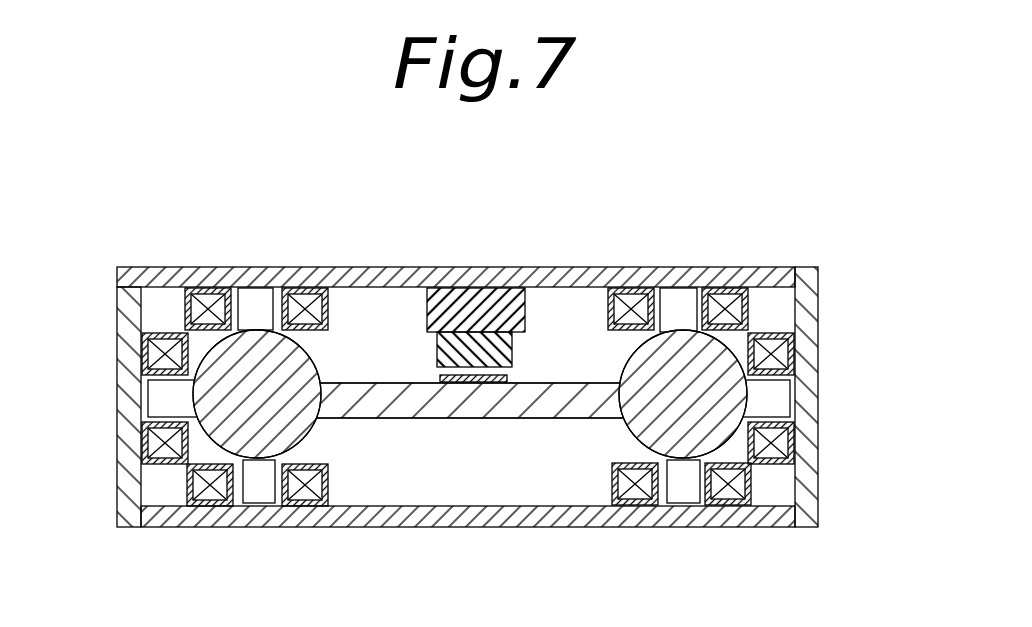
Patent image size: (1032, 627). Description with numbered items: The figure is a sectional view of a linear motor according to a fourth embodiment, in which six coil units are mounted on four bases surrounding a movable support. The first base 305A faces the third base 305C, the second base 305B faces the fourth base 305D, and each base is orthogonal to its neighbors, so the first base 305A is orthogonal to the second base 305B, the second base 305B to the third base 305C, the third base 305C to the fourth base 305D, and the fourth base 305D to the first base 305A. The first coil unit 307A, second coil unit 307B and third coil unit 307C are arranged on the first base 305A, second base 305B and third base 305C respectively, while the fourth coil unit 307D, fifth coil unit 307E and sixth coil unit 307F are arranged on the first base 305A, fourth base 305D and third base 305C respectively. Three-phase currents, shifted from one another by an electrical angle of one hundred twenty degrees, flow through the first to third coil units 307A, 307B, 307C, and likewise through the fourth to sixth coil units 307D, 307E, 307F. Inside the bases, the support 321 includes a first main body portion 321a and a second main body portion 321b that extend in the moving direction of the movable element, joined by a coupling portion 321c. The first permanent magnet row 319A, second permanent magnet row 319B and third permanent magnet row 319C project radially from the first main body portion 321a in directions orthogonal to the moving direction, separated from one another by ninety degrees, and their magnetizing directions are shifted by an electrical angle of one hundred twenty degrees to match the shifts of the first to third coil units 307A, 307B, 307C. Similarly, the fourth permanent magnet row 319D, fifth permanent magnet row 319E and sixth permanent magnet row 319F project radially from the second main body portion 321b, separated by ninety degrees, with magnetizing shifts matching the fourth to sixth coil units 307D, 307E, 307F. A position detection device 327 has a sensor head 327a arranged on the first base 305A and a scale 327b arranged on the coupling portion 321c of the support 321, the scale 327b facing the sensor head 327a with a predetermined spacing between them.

The first base 305A is at (745, 278).
The second base 305B is at (128, 380).
The third base 305C is at (407, 513).
The fourth base 305D is at (813, 334).
The first coil unit 307A is at (200, 297).
The second coil unit 307B is at (150, 445).
The third coil unit 307C is at (310, 507).
The fourth coil unit 307D is at (631, 303).
The fifth coil unit 307E is at (788, 362).
The sixth coil unit 307F is at (731, 500).
The first permanent magnet row 319A is at (255, 295).
The second permanent magnet row 319B is at (155, 400).
The third permanent magnet row 319C is at (260, 500).
The fourth permanent magnet row 319D is at (676, 300).
The fifth permanent magnet row 319E is at (782, 398).
The sixth permanent magnet row 319F is at (684, 497).
The support 321 is at (521, 366).
The first main body portion 321a is at (303, 363).
The second main body portion 321b is at (727, 370).
The coupling portion 321c is at (489, 418).
The position detection device 327 is at (497, 280).
The sensor head 327a is at (456, 328).
The scale 327b is at (492, 365).